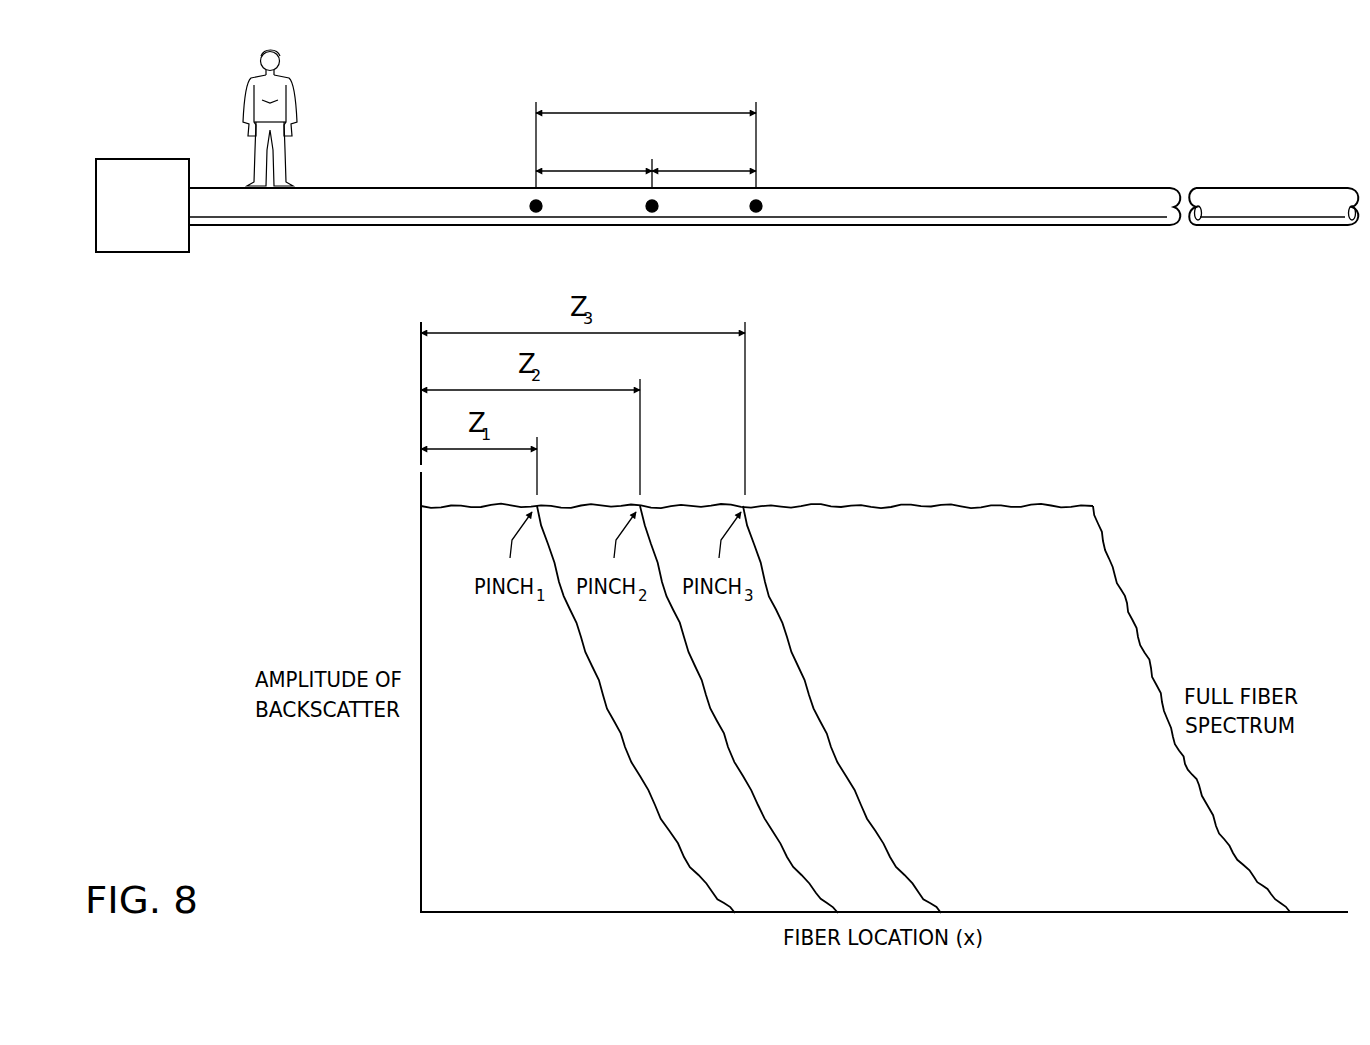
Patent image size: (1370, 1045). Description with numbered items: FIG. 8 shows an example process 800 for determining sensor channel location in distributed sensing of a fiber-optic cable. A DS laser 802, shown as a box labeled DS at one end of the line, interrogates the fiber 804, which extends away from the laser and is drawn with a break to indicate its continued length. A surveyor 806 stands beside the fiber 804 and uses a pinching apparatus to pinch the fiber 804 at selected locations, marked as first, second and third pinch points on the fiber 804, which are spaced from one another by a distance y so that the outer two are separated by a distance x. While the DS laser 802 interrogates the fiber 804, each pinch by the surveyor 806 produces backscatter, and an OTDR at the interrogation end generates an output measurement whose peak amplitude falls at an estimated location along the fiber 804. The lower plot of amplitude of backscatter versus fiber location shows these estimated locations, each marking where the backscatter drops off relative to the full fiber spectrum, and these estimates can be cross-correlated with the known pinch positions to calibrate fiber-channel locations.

The distributed fiber sensing system 800 is at (860, 95).
The DS laser 802 is at (142, 158).
The fiber 804 is at (930, 186).
The surveyor 806 is at (247, 94).